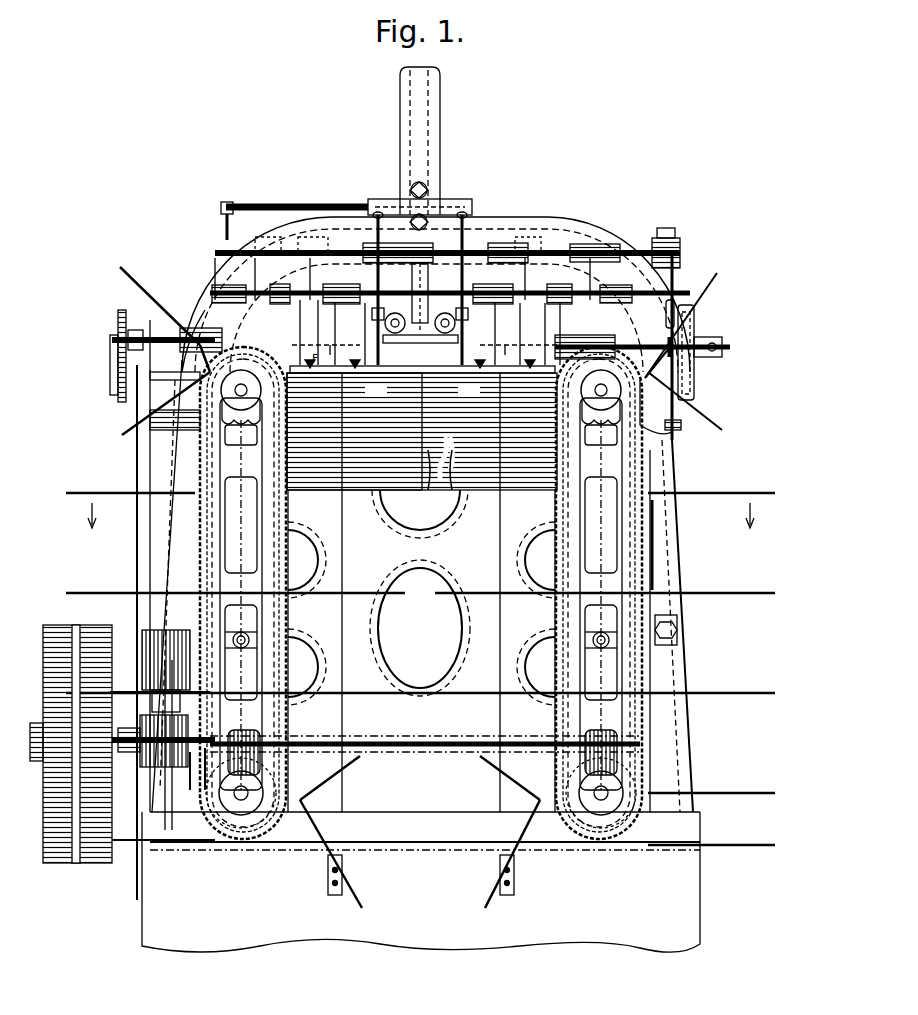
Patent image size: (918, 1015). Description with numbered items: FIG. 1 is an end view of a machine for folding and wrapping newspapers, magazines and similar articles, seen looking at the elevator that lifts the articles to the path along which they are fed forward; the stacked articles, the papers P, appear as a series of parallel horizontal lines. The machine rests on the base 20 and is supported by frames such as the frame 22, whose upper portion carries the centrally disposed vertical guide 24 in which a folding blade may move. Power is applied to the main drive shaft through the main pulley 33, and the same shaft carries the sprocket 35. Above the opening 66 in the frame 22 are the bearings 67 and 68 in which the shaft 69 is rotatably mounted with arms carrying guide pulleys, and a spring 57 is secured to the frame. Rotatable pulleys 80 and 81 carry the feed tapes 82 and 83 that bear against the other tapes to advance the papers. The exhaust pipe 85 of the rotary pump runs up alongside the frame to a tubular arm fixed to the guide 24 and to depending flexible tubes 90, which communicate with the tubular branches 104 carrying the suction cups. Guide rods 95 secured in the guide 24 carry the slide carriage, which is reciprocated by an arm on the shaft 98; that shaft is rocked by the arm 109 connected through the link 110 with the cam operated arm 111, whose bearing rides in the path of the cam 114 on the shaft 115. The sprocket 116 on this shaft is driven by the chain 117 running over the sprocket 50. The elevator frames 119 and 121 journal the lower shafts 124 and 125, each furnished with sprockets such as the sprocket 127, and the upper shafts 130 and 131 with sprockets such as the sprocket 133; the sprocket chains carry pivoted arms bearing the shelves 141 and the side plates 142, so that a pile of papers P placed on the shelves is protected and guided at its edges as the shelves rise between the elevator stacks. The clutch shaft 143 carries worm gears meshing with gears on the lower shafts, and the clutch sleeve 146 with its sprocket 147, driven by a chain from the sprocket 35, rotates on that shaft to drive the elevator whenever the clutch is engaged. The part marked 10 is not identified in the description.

The main cam shaft 10 is at (582, 248).
The base 20 is at (421, 854).
The frame 22 is at (425, 637).
The vertical guide 24 is at (440, 108).
The main pulley 33 is at (108, 862).
The sprocket 35 is at (143, 770).
The sprocket 50 is at (135, 360).
The spring 57 is at (412, 278).
The opening 66 is at (182, 335).
The bearings 67 is at (495, 284).
The bearings 68 is at (356, 262).
The shaft 69 is at (448, 202).
The pulleys 80 is at (422, 431).
The pulleys 81 is at (354, 431).
The feed tapes 82 is at (469, 391).
The feed tapes 83 is at (376, 391).
The exhaust pipe 85 is at (296, 206).
The flexible tubes 90 is at (378, 236).
The guide rods 95 is at (384, 324).
The shaft 98 is at (652, 248).
The tubular branches 104 is at (422, 368).
The arm 109 is at (674, 280).
The link 110 is at (676, 310).
The cam operated arm 111 is at (681, 358).
The cam 114 is at (694, 374).
The shaft 115 is at (716, 346).
The sprocket 116 is at (126, 322).
The chain 117 is at (112, 358).
The elevator frame 119 is at (599, 593).
The elevator frame 121 is at (243, 593).
The lower shaft 124 is at (603, 800).
The lower shaft 125 is at (244, 800).
The sprocket 127 is at (270, 790).
The upper shaft 130 is at (241, 396).
The upper shaft 131 is at (601, 396).
The sprocket 133 is at (241, 435).
The shelves 141 is at (130, 275).
The side plates 142 is at (250, 345).
The clutch shaft 143 is at (655, 552).
The clutch sleeve 146 is at (152, 671).
The sprocket 147 is at (140, 765).
The papers P is at (420, 514).